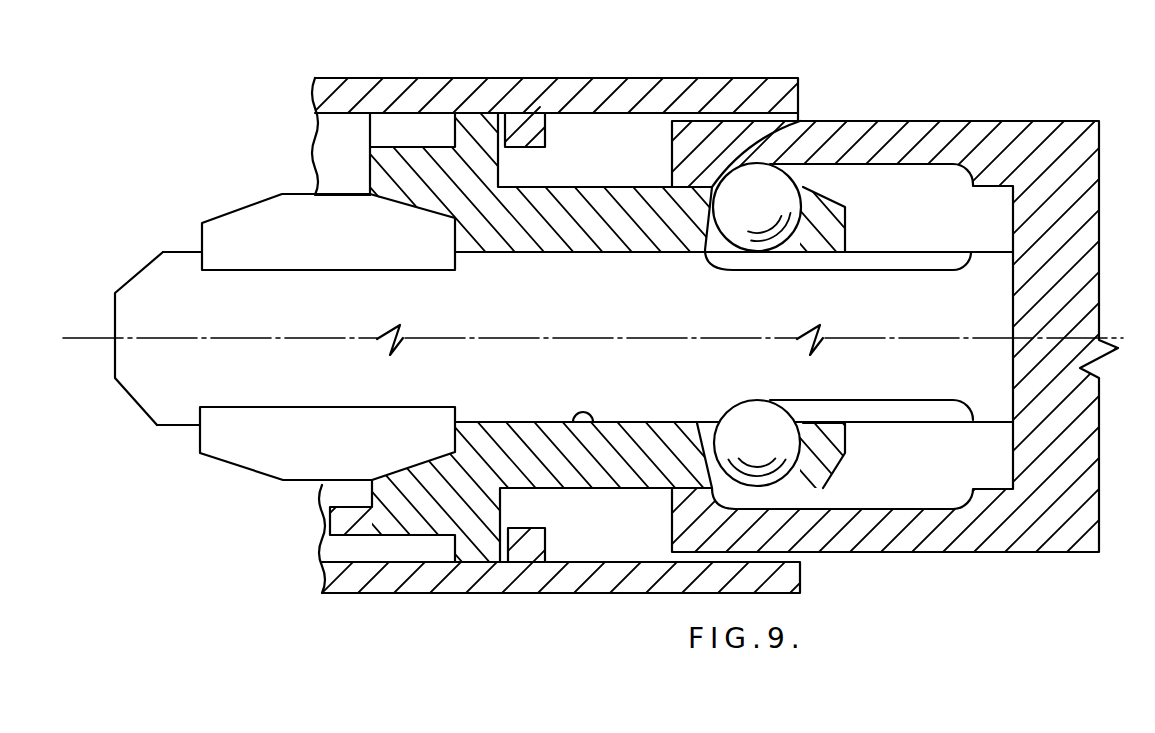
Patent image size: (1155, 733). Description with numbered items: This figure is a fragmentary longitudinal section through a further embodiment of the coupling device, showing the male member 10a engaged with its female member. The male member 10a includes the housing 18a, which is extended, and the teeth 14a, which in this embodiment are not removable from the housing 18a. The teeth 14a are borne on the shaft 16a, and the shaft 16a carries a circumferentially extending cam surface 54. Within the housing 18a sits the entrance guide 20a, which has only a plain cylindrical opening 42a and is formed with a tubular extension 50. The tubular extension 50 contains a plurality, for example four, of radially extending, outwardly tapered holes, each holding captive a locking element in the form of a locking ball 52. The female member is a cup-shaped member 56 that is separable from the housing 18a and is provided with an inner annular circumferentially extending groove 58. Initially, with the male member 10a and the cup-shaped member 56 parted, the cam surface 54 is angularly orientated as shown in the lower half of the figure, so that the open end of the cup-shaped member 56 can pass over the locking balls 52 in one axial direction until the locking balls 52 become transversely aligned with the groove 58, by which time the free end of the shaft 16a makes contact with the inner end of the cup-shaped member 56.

The male member 10a is at (556, 365).
The teeth 14a is at (255, 447).
The shaft 16a is at (682, 373).
The housing 18a is at (394, 578).
The entrance guide 20a is at (410, 157).
The plain cylindrical opening 42a is at (590, 424).
The tubular extension 50 is at (565, 193).
The locking ball 52 is at (765, 190).
The cam surface 54 is at (913, 401).
The cup-shaped member 56 is at (1060, 182).
The annular circumferentially extending groove 58 is at (900, 193).